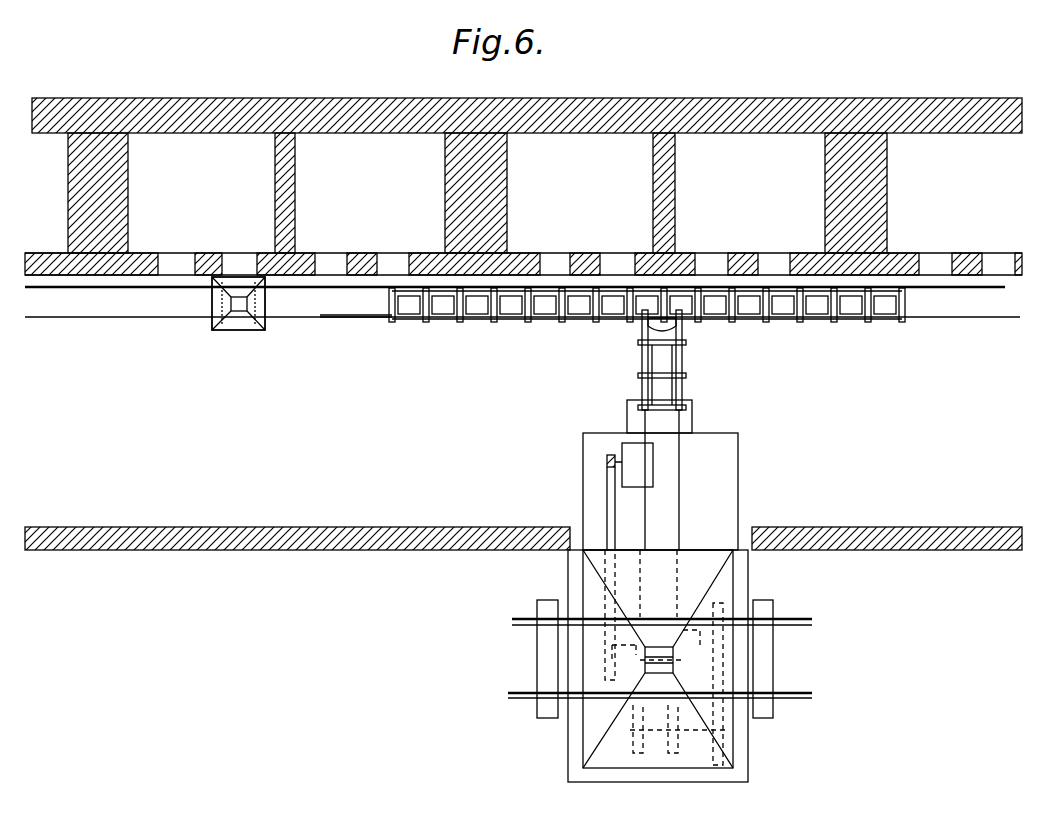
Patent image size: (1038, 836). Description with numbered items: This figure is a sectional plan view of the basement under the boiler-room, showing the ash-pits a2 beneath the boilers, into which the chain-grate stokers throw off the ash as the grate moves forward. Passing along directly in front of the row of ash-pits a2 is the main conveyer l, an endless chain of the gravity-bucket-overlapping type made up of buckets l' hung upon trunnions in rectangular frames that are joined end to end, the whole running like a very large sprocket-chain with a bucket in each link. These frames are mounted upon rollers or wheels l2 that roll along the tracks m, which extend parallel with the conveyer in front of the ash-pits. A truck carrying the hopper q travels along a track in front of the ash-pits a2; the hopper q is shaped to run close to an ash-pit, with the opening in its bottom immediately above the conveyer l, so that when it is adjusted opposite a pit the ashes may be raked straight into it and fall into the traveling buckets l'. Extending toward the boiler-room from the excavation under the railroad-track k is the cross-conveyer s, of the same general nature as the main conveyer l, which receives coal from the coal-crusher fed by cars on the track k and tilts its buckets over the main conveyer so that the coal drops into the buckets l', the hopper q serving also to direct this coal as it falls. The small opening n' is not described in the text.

The ash-pit a2 is at (477, 193).
The hopper q is at (238, 320).
The tracks m is at (300, 288).
The conveyer l is at (356, 330).
The rollers or wheels l2 is at (397, 318).
The buckets l' is at (648, 321).
The cross-conveyer s is at (680, 485).
The discharge opening n' is at (643, 665).
The railroad-track k is at (778, 693).